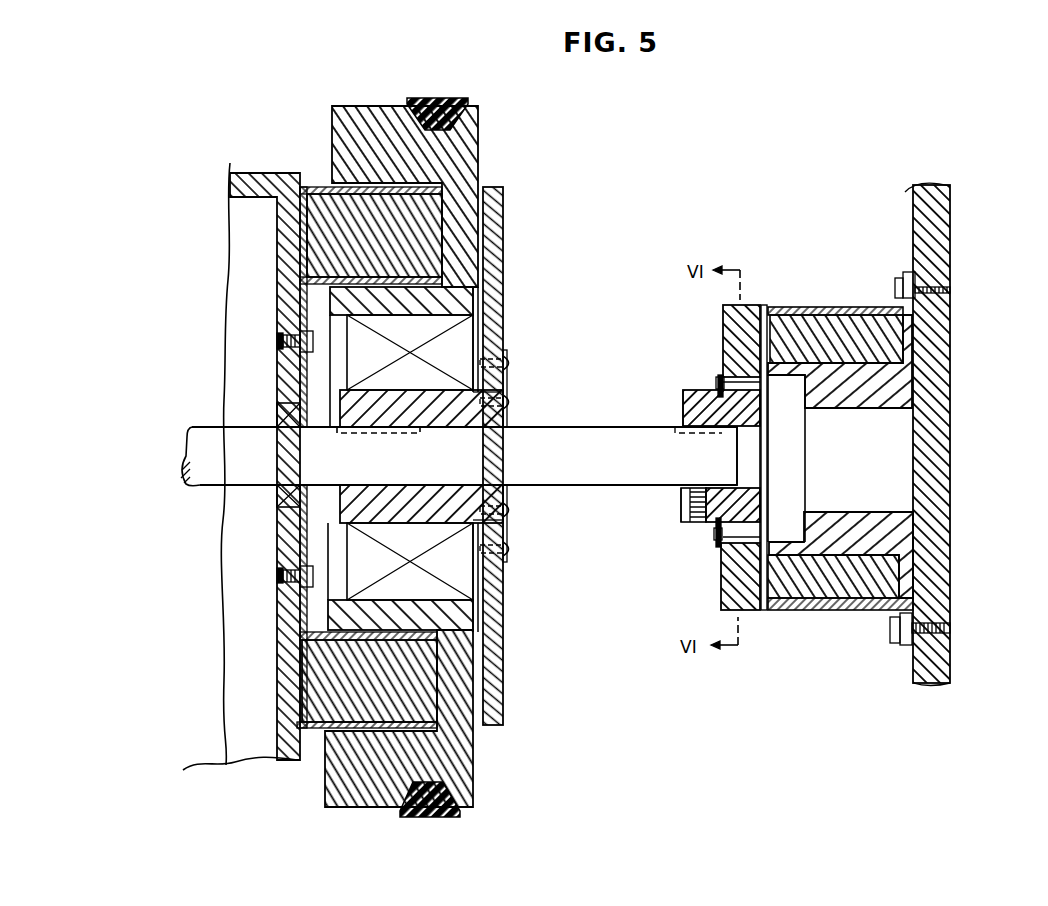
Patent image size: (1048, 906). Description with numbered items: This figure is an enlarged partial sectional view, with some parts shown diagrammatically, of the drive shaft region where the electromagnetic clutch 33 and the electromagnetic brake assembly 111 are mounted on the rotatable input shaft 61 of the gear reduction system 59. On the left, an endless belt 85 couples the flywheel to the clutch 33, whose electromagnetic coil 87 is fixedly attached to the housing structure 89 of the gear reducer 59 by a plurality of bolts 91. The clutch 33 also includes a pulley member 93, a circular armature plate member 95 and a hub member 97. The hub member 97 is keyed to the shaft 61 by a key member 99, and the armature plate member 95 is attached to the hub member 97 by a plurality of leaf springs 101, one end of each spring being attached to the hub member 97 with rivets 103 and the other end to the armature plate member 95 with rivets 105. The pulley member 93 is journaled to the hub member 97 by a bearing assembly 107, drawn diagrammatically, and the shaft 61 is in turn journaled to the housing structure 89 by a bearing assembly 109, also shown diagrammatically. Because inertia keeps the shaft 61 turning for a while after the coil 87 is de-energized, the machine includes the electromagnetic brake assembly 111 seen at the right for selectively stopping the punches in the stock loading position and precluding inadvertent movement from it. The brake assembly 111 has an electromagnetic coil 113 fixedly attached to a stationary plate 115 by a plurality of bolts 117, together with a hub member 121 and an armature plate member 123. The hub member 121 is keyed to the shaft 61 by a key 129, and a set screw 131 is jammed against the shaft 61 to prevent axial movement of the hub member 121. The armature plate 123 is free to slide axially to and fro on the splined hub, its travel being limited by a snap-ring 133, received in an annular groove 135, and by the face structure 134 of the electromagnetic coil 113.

The clutch 33 is at (515, 773).
The gear reduction system 59 is at (230, 733).
The input shaft 61 is at (620, 470).
The endless belt 85 is at (434, 104).
The electromagnetic coil 87 is at (337, 215).
The housing structure 89 is at (290, 270).
The bolts 91 is at (277, 340).
The pulley member 93 is at (467, 143).
The armature plate member 95 is at (497, 245).
The hub member 97 is at (437, 412).
The key member 99 is at (370, 428).
The leaf springs 101 is at (507, 388).
The rivets 103 is at (513, 402).
The rivets 105 is at (513, 362).
The bearing assembly 107 is at (460, 342).
The bearing assembly 109 is at (277, 415).
The electromagnetic brake assembly 111 is at (847, 742).
The electromagnetic coil 113 is at (826, 330).
The stationary plate 115 is at (945, 230).
The bolts 117 is at (893, 288).
The hub member 121 is at (682, 408).
The armature plate member 123 is at (748, 318).
The key 129 is at (682, 425).
The set screw 131 is at (698, 523).
The snap-ring 133 is at (719, 383).
The face structure 134 is at (765, 325).
The annular groove 135 is at (718, 390).